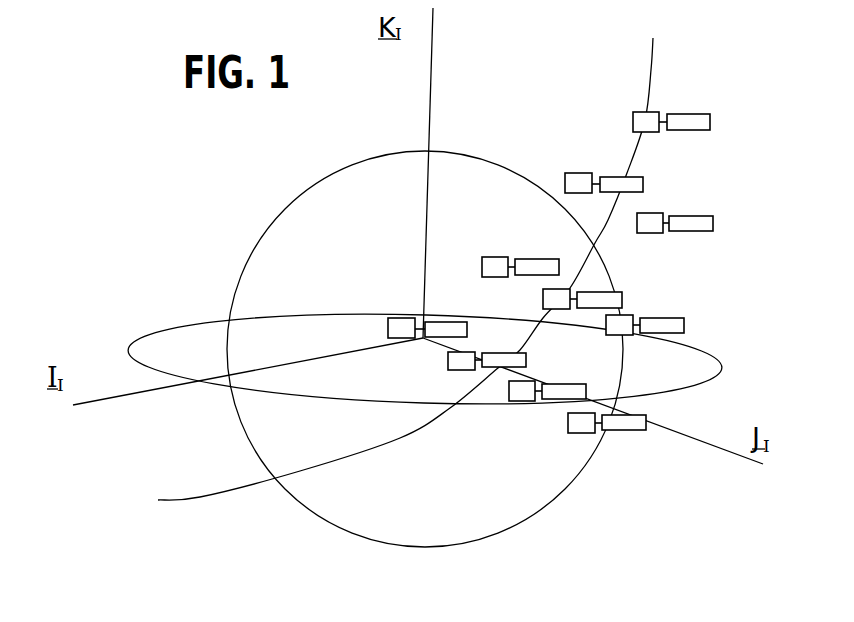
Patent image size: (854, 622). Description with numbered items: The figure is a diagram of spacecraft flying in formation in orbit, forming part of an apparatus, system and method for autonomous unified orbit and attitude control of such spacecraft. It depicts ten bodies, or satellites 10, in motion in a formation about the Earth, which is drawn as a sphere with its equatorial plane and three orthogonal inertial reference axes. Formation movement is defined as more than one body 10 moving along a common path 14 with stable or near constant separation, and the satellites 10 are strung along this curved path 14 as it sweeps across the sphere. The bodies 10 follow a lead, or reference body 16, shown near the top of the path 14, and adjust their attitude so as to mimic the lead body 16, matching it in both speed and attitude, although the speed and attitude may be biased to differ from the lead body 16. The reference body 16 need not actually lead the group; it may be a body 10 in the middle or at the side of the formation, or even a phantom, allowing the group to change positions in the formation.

The satellites 10 is at (591, 255).
The common path 14 is at (652, 63).
The reference body 16 is at (632, 121).